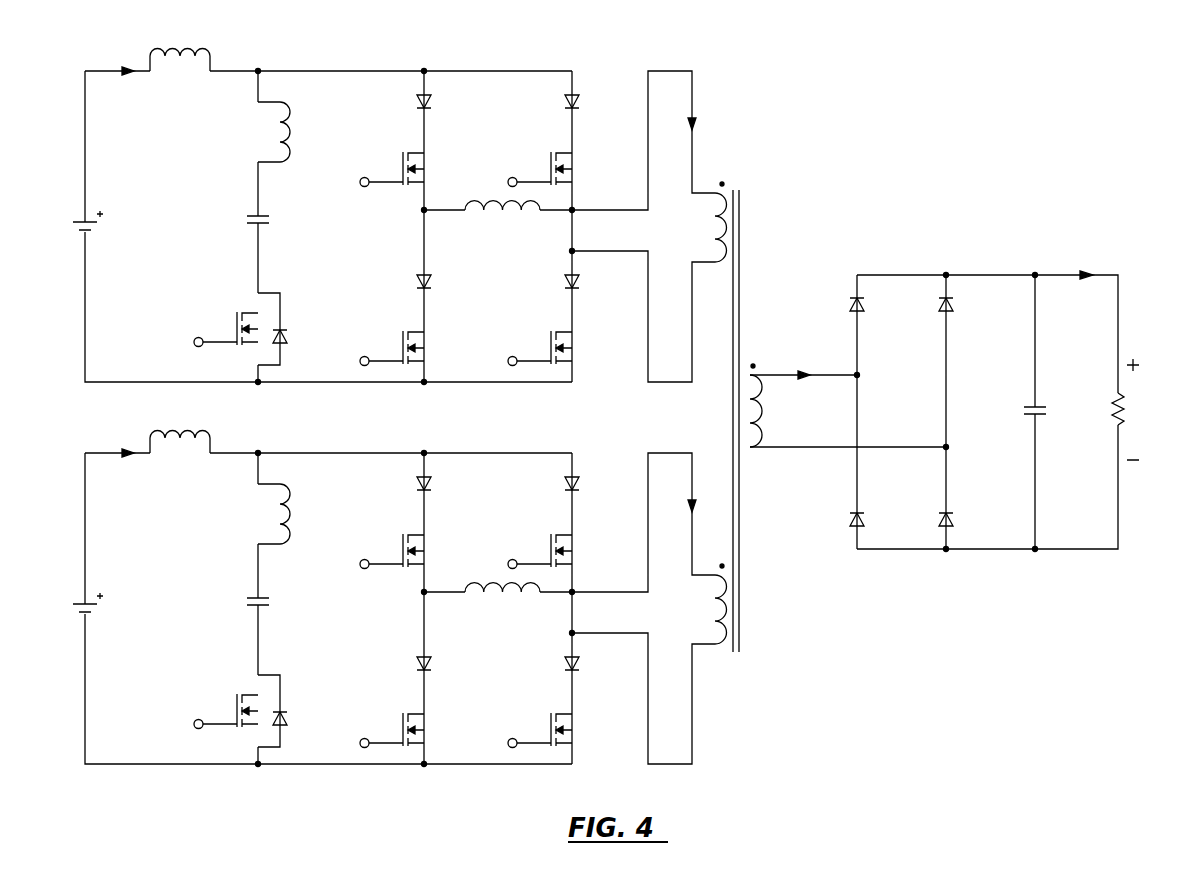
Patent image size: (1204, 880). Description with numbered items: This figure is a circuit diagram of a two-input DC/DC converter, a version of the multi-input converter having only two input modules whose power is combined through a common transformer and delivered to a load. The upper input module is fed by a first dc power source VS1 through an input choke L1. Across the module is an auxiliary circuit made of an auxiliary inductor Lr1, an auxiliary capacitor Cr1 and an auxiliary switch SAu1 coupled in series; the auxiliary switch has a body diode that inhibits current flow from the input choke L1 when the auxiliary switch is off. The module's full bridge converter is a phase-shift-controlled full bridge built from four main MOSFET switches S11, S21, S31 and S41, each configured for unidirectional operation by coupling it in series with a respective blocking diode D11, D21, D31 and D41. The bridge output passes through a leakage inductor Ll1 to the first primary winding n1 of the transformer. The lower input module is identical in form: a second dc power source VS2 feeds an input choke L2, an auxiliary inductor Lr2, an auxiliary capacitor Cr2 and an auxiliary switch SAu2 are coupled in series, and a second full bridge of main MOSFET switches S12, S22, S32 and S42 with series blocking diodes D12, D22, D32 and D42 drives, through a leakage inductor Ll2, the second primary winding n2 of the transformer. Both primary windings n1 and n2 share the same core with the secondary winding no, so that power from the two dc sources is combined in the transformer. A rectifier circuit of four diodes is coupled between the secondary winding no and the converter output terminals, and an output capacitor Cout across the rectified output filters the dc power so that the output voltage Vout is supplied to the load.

The input choke L1 is at (180, 76).
The auxiliary inductor Lr1 is at (297, 132).
The auxiliary capacitor Cr1 is at (283, 225).
The dc power source VS1 is at (118, 234).
The auxiliary switch SAu1 is at (270, 329).
The blocking diode D11 is at (451, 108).
The blocking diode D21 is at (599, 108).
The blocking diode D31 is at (451, 288).
The blocking diode D41 is at (599, 288).
The main MOSFET switch S11 is at (421, 174).
The main MOSFET switch S21 is at (569, 174).
The main MOSFET switch S31 is at (421, 353).
The main MOSFET switch S41 is at (569, 353).
The leakage inductor Ll1 is at (502, 226).
The primary winding n1 is at (695, 227).
The input choke L2 is at (180, 458).
The auxiliary inductor Lr2 is at (297, 514).
The auxiliary capacitor Cr2 is at (283, 607).
The dc power source VS2 is at (118, 616).
The auxiliary switch SAu2 is at (270, 711).
The blocking diode D12 is at (451, 490).
The blocking diode D22 is at (599, 490).
The blocking diode D32 is at (451, 670).
The blocking diode D42 is at (599, 670).
The main MOSFET switch S12 is at (421, 556).
The main MOSFET switch S22 is at (569, 556).
The main MOSFET switch S32 is at (421, 735).
The main MOSFET switch S42 is at (569, 735).
The leakage inductor Ll2 is at (502, 608).
The primary winding n2 is at (695, 609).
The secondary winding no is at (777, 411).
The output capacitor Cout is at (1062, 420).
The output voltage Vout is at (1151, 409).